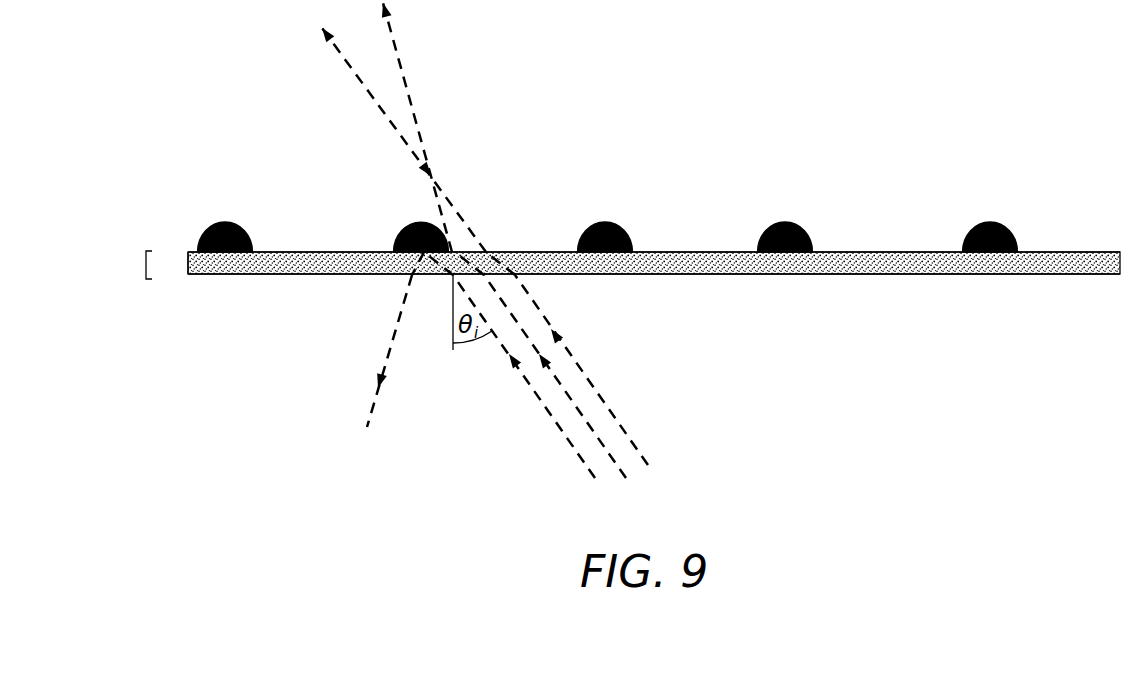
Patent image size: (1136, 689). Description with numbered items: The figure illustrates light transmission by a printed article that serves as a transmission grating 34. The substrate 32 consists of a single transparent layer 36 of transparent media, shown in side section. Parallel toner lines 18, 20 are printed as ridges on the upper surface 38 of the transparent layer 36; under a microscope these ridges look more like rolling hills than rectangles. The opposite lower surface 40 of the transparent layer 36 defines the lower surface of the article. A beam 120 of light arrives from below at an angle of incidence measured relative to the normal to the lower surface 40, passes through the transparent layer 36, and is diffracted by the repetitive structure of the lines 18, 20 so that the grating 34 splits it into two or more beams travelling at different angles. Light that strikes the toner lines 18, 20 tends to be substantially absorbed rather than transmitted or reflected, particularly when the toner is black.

The line 18 is at (403, 225).
The line 20 is at (588, 222).
The substrate 32 is at (146, 266).
The transmission grating 34 is at (802, 175).
The transparent layer 36 is at (188, 262).
The upper surface 38 is at (897, 260).
The lower surface 40 is at (855, 274).
The beam 120 is at (629, 489).